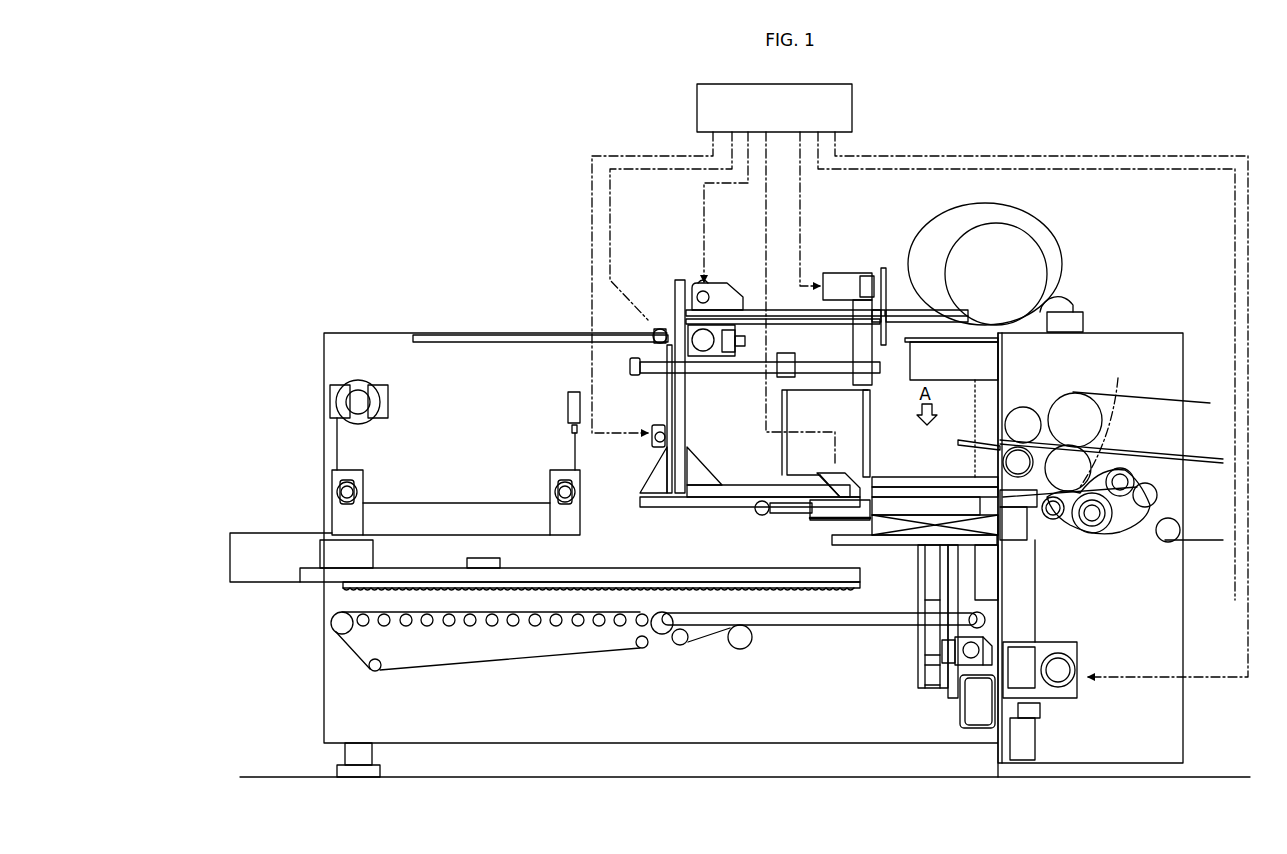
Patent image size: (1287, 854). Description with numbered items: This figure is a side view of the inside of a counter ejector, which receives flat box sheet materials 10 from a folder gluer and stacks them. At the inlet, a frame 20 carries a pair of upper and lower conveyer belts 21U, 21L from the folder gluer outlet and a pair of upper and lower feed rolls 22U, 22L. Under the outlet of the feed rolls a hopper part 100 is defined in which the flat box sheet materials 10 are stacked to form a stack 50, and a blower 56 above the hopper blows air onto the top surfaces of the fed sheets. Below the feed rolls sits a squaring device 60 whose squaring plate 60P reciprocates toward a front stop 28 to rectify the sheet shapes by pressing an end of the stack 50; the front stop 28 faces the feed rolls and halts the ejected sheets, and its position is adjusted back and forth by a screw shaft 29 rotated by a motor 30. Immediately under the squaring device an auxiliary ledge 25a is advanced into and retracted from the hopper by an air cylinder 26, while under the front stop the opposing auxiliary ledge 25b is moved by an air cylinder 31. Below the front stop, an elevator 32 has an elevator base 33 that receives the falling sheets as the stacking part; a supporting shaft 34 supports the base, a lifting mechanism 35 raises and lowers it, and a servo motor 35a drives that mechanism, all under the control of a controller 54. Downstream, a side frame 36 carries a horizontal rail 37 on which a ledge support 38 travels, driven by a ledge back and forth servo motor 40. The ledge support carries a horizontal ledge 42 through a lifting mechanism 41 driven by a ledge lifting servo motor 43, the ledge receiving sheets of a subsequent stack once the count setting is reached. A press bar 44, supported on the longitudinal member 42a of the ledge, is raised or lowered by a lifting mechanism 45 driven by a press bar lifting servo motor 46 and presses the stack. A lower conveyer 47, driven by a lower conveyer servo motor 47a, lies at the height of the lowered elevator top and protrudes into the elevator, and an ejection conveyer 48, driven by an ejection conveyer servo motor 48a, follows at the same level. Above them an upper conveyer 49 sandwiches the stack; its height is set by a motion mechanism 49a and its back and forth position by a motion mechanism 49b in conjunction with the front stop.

The controller 54 is at (856, 108).
The blower 56 is at (950, 222).
The frame 20 is at (1148, 330).
The side frame 36 is at (357, 333).
The rail 37 is at (448, 345).
The ledge back and forth servo motor 40 is at (700, 282).
The lifting mechanism 41 is at (660, 318).
The ledge support 38 is at (750, 310).
The screw shaft 29 is at (808, 356).
The motor 30 is at (845, 272).
The ledge lifting servo motor 43 is at (632, 363).
The longitudinal member 42a is at (686, 380).
The upper feed roll 22U is at (1030, 408).
The lower feed roll 22L is at (1000, 468).
The squaring plate 60P is at (1107, 422).
The upper conveyer belt 21U is at (1198, 400).
The lower conveyer belt 21L is at (1200, 460).
The motion mechanism 49a is at (455, 503).
The press bar lifting servo motor 46 is at (650, 447).
The lifting mechanism 45 is at (652, 460).
The ledge 42 is at (748, 487).
The air cylinder 31 is at (830, 495).
The front stop 28 is at (875, 450).
The flat box sheet material 10 is at (965, 440).
The hopper part 100 is at (1030, 463).
The auxiliary ledge 25b is at (845, 518).
The motion mechanism 49b is at (560, 582).
The upper conveyer 49 is at (663, 580).
The press bar 44 is at (703, 507).
The elevator base 33 is at (852, 540).
The stack 50 is at (880, 538).
The auxiliary ledge 25a is at (1015, 535).
The air cylinder 26 is at (1043, 522).
The squaring device 60 is at (1060, 532).
The elevator 32 is at (907, 553).
The ejection conveyer servo motor 48a is at (330, 623).
The lower conveyer servo motor 47a is at (665, 632).
The ejection conveyer 48 is at (548, 628).
The lower conveyer 47 is at (782, 616).
The supporting shaft 34 is at (918, 660).
The lifting mechanism 35 is at (945, 700).
The servo motor 35a is at (1005, 635).